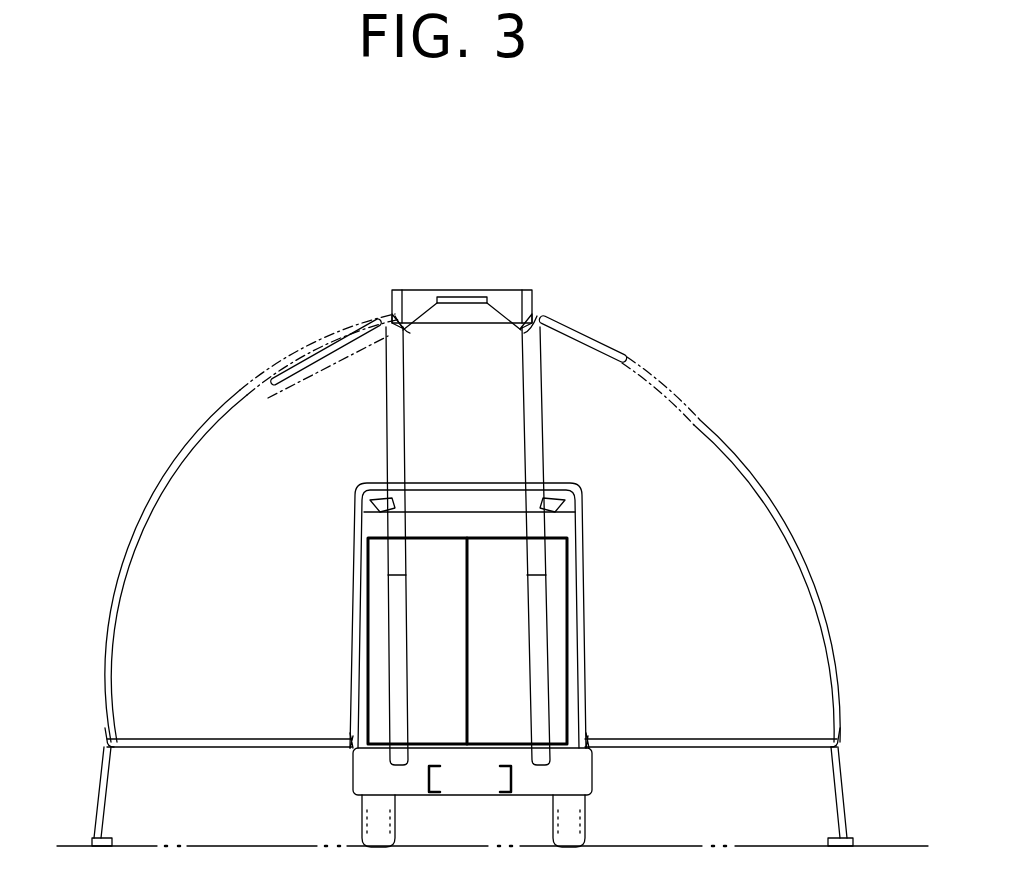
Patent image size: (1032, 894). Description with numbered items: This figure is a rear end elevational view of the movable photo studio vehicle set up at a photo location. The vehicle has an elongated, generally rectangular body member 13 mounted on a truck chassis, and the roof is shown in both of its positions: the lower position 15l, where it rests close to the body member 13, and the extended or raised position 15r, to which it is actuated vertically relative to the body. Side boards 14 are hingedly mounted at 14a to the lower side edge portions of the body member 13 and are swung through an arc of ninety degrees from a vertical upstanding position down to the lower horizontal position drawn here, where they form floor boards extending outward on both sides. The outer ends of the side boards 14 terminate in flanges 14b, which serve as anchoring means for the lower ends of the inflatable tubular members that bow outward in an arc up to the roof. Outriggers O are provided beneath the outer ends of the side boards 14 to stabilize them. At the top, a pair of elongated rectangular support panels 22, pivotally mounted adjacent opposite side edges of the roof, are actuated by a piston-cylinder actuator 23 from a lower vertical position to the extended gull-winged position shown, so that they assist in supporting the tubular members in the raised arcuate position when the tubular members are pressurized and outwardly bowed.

The body member 13 is at (580, 652).
The side boards 14 is at (583, 577).
The hinge mounting 14a is at (352, 737).
The flanges 14b is at (112, 733).
The raised position of roof 15r is at (505, 297).
The lower position of roof 15l is at (495, 490).
The support panels 22 is at (612, 347).
The piston-cylinder actuator 23 is at (502, 326).
The outriggers O is at (120, 770).